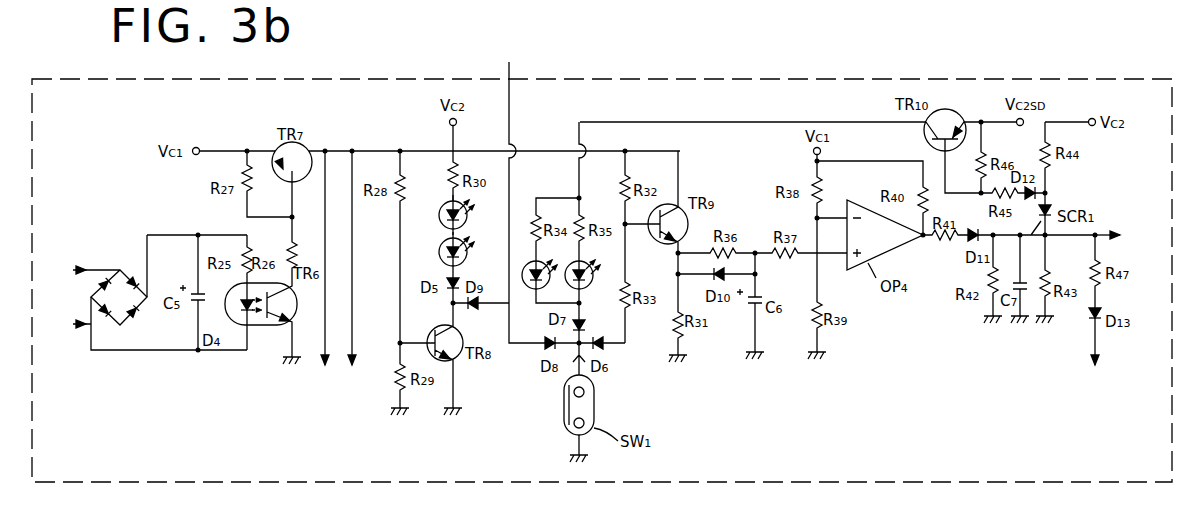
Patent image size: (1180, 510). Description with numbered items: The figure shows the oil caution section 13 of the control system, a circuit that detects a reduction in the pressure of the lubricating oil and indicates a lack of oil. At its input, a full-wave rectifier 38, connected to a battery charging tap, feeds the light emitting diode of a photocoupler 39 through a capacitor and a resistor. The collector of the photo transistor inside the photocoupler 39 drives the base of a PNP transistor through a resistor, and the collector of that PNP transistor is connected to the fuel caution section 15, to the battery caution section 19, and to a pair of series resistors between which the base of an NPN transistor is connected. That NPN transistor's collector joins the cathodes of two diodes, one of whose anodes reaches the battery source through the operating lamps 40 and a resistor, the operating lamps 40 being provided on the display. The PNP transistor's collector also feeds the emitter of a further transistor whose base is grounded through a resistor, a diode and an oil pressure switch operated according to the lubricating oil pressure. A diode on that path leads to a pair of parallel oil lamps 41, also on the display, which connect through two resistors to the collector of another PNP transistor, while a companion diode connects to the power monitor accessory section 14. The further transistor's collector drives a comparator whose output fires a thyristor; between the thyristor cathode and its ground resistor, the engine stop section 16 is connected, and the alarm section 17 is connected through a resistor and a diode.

The oil caution section 13 is at (853, 62).
The power monitor accessory section 14 is at (561, 192).
The fuel caution section 15 is at (353, 273).
The engine stop section 16 is at (1122, 237).
The alarm section 17 is at (1097, 358).
The battery caution section 19 is at (325, 273).
The full-wave rectifier 38 is at (114, 263).
The photocoupler 39 is at (259, 330).
The operating lamps 40 is at (434, 212).
The oil lamps 41 is at (592, 283).